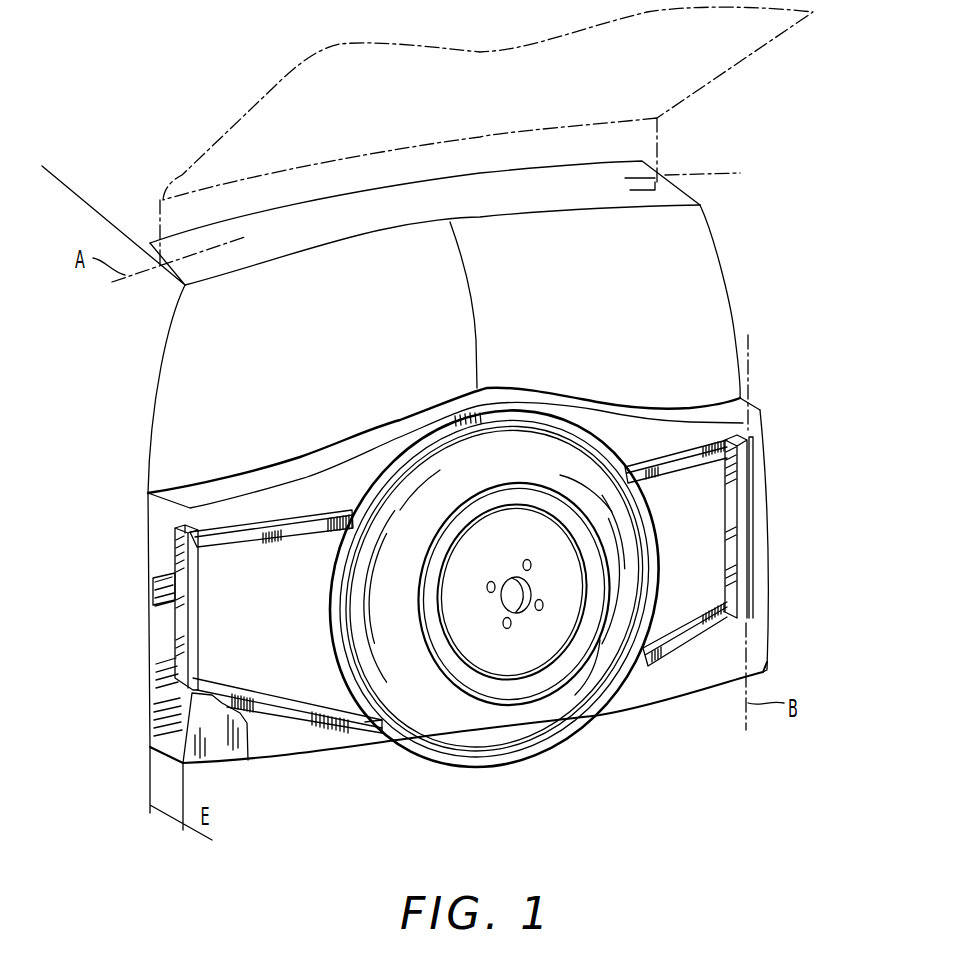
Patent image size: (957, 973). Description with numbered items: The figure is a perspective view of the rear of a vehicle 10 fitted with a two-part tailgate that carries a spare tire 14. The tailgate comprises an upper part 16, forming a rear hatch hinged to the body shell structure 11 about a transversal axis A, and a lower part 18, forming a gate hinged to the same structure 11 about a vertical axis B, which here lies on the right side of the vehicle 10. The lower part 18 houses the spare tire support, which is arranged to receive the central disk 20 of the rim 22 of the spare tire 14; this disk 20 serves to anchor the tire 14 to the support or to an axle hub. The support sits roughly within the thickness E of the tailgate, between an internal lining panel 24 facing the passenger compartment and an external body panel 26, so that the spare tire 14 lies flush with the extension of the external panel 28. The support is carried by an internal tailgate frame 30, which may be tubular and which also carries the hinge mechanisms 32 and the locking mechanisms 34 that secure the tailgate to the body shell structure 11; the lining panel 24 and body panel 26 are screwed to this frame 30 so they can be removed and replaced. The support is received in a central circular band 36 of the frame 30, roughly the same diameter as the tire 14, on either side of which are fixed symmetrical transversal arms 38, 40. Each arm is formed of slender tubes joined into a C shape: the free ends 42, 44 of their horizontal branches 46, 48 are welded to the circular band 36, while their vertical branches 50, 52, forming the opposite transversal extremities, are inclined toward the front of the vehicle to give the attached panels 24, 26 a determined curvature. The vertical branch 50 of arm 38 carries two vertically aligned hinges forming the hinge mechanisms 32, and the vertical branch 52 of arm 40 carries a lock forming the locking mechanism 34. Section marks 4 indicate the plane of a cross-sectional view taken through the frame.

The vehicle 10 is at (100, 122).
The body shell structure 11 is at (722, 263).
The spare tire 14 is at (490, 742).
The upper part 16 is at (756, 47).
The lower part 18 is at (703, 692).
The central disk 20 is at (473, 658).
The rim 22 is at (522, 635).
The internal lining panel 24 is at (151, 707).
The external body panel 26 is at (428, 436).
The external panel 28 is at (222, 752).
The internal tailgate frame 30 is at (505, 408).
The hinge mechanisms 32 is at (753, 455).
The locking mechanisms 34 is at (158, 587).
The central circular band 36 is at (384, 478).
The transversal arm 38 is at (661, 457).
The transversal arm 40 is at (243, 521).
The free end 42 is at (634, 472).
The free end 44 is at (350, 514).
The horizontal branch 46 is at (678, 477).
The horizontal branch 48 is at (287, 532).
The vertical branch 50 is at (736, 595).
The vertical branch 52 is at (186, 573).
The section line 4- 4 is at (230, 638).